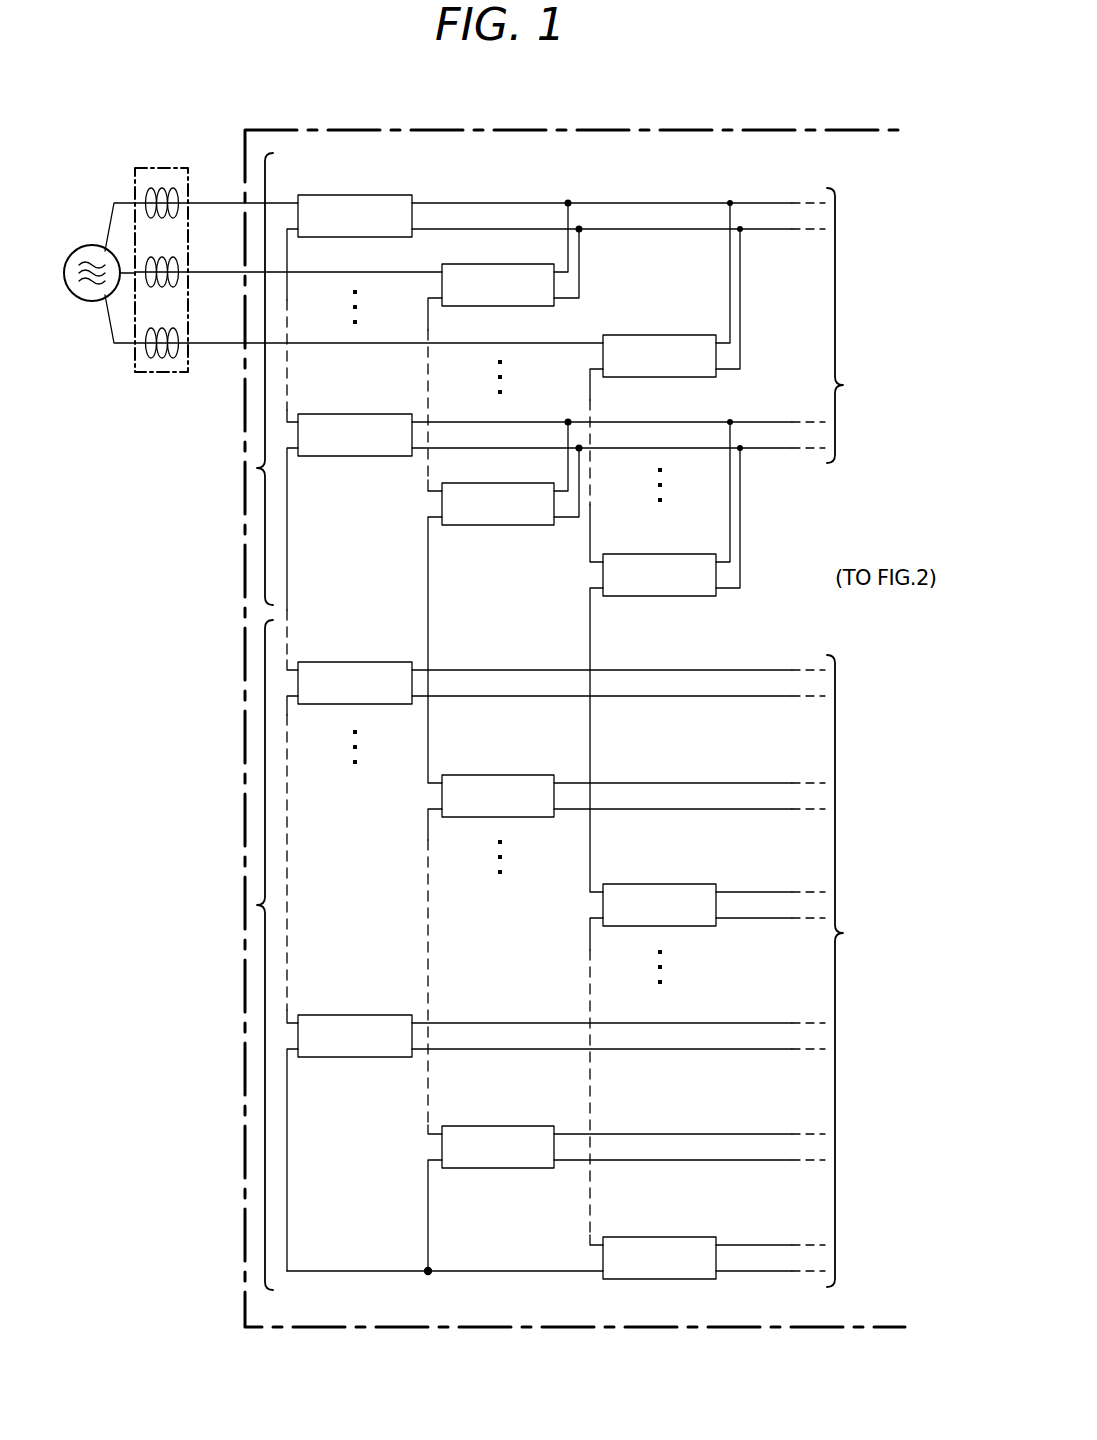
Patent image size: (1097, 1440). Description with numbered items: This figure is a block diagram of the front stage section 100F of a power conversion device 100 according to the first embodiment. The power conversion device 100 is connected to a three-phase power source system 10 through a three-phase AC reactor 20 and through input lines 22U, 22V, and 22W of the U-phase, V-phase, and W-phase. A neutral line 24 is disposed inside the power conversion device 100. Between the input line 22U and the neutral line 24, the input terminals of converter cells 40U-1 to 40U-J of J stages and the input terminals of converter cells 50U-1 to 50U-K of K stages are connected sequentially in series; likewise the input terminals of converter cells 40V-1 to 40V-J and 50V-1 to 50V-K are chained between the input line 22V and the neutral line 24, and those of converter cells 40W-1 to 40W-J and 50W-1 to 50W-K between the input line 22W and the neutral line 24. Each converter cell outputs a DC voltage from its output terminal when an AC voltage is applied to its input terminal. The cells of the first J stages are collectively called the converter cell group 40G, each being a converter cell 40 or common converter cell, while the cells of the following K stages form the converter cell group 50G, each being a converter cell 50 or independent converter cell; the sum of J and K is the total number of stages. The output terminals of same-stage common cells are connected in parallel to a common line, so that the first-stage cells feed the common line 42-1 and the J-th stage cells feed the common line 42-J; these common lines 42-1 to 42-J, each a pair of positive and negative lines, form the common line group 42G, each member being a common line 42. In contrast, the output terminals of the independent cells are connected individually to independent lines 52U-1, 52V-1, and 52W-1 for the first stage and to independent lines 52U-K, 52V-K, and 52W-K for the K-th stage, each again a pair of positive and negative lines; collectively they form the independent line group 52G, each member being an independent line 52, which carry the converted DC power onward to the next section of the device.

The three-phase power source system 10 is at (89, 247).
The three-phase AC reactor 20 is at (162, 166).
The U-phase input line 22U is at (215, 201).
The V-phase input line 22V is at (215, 270).
The W-phase input line 22W is at (215, 341).
The neutral line 24 is at (356, 1270).
The converter cell (common converter cell) 40 is at (189, 379).
The converter cell group 40G is at (250, 468).
The converter cell 40U-1 is at (318, 195).
The converter cell 40V-1 is at (462, 264).
The converter cell 40W-1 is at (623, 335).
The converter cell 40U-J is at (318, 414).
The converter cell 40V-J is at (462, 483).
The converter cell 40W-J is at (623, 554).
The common line 42 is at (876, 332).
The common line group 42G is at (848, 387).
The common line 42-1 is at (775, 229).
The common line 42-J is at (775, 448).
The converter cell (independent converter cell) 50 is at (189, 955).
The converter cell group 50G is at (250, 905).
The converter cell 50U-1 is at (318, 662).
The converter cell 50V-1 is at (462, 775).
The converter cell 50W-1 is at (623, 884).
The converter cell 50U-K is at (318, 1015).
The converter cell 50V-K is at (462, 1126).
The converter cell 50W-K is at (623, 1237).
The independent line 52 is at (876, 971).
The independent line group 52G is at (848, 935).
The independent line 52U-1 is at (775, 696).
The independent line 52V-1 is at (775, 809).
The independent line 52W-1 is at (775, 918).
The independent line 52U-K is at (775, 1049).
The independent line 52V-K is at (775, 1160).
The independent line 52W-K is at (775, 1271).
The power conversion device 100 is at (575, 694).
The front stage section 100F is at (517, 128).